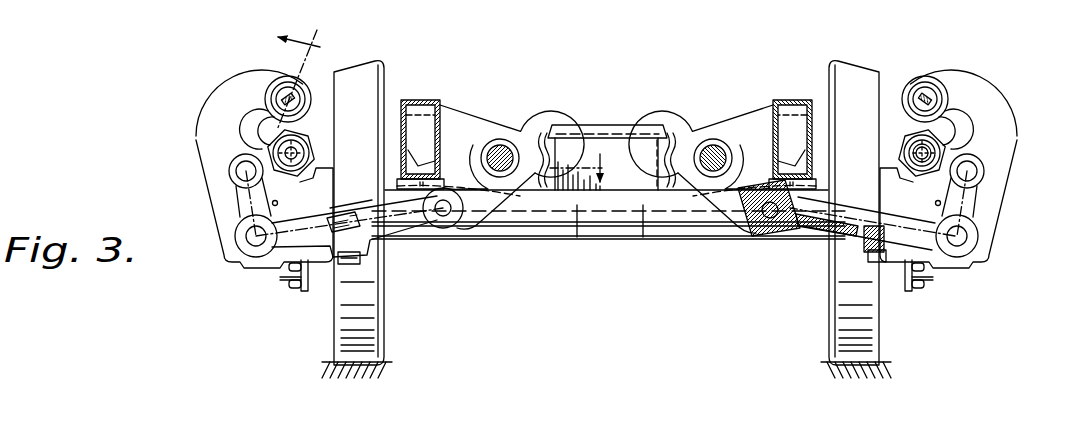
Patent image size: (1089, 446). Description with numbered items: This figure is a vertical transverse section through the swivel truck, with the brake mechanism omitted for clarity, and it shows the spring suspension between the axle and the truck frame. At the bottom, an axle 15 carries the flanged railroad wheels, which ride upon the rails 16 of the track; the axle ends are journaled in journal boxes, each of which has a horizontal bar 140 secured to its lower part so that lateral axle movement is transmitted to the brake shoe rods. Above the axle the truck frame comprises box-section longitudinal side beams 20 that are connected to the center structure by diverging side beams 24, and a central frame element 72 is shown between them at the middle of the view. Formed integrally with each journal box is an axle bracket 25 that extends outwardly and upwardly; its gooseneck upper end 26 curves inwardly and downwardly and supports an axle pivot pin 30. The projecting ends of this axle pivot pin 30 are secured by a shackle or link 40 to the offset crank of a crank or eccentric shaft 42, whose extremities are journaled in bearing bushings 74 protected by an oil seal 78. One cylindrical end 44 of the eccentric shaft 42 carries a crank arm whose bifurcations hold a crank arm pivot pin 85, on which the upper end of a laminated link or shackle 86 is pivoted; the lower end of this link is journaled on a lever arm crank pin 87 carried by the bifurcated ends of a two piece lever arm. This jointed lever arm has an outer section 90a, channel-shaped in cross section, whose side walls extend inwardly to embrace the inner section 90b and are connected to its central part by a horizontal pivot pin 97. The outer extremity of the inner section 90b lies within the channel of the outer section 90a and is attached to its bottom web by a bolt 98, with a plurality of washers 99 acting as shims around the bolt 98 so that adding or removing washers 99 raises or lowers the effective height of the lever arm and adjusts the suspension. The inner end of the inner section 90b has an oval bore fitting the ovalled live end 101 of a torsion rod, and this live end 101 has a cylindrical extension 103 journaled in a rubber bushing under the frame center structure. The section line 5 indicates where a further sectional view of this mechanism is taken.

The section line 5 is at (454, 100).
The axle 15 is at (617, 238).
The rail 16 is at (373, 362).
The longitudinal side beam 20 is at (438, 100).
The side beam 24 is at (512, 126).
The axle bracket 25 is at (200, 154).
The upper end of axle bracket 26 is at (246, 72).
The axle pivot pin 30 is at (272, 95).
The shackle or link 40 is at (262, 111).
The crank or eccentric shaft 42 is at (252, 128).
The end of eccentric shaft 44 is at (938, 144).
The housing 72 is at (622, 104).
The bearing bushing 74 is at (380, 63).
The oil seal 78 is at (262, 205).
The crank arm pivot pin 85 is at (238, 172).
The laminated link or shackle 86 is at (273, 203).
The lever arm crank pin 87 is at (250, 234).
The outer section of lever arm 90a is at (286, 250).
The inner section of lever arm 90b is at (488, 206).
The horizontal pivot pin 97 is at (446, 229).
The bolt 98 is at (350, 264).
The washers 99 is at (355, 212).
The live end of torsion rod 101 is at (512, 166).
The cylindrical extension 103 is at (503, 152).
The horizontal bar 140 is at (924, 277).